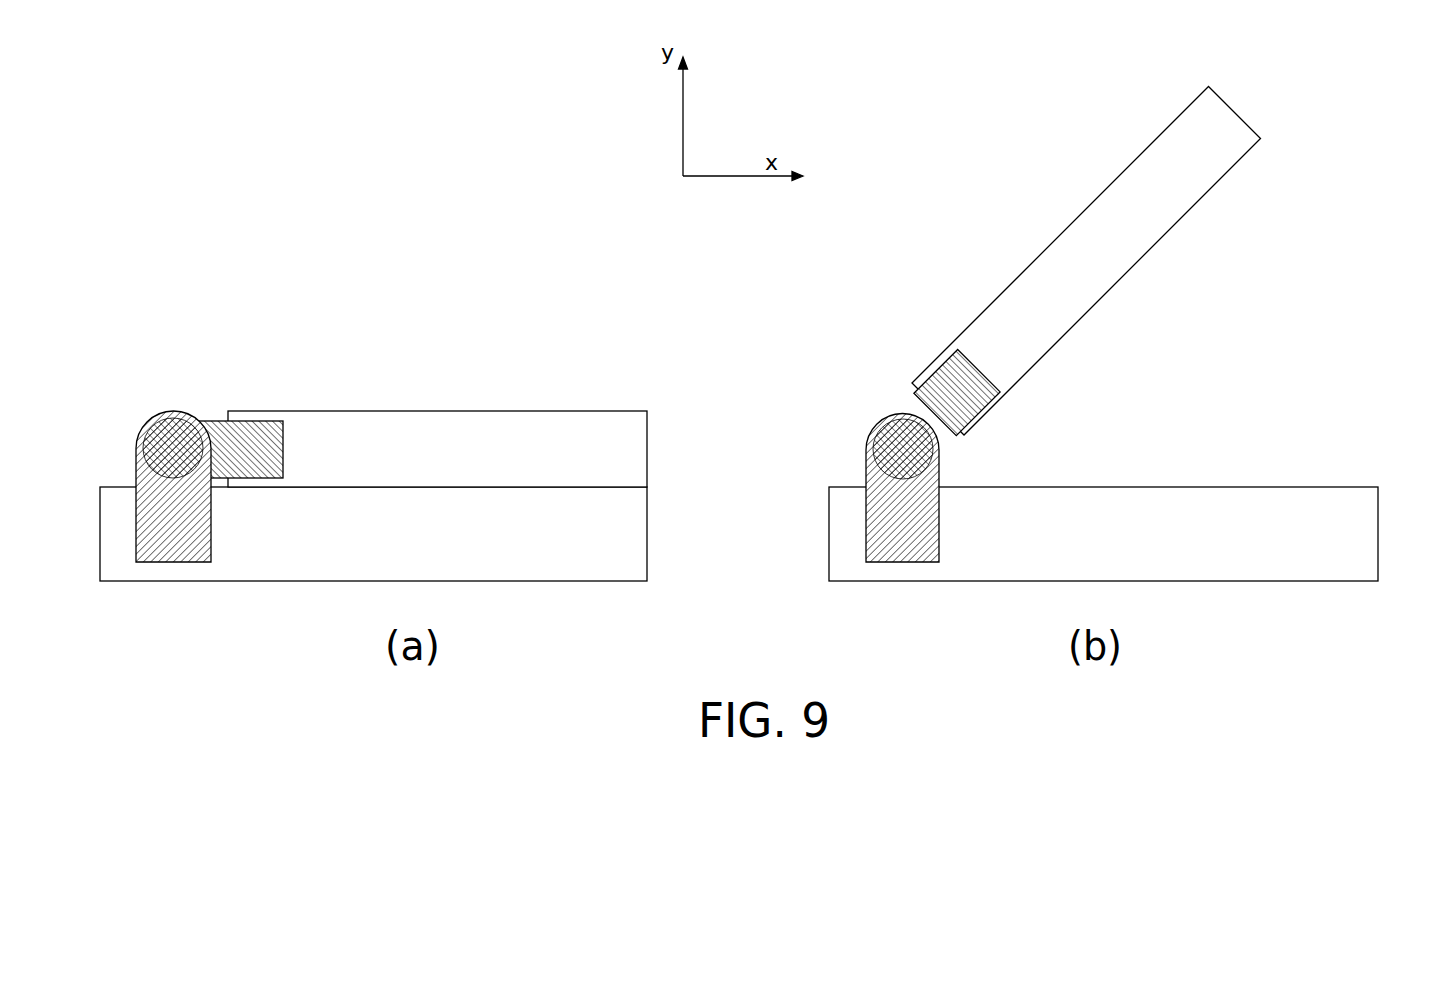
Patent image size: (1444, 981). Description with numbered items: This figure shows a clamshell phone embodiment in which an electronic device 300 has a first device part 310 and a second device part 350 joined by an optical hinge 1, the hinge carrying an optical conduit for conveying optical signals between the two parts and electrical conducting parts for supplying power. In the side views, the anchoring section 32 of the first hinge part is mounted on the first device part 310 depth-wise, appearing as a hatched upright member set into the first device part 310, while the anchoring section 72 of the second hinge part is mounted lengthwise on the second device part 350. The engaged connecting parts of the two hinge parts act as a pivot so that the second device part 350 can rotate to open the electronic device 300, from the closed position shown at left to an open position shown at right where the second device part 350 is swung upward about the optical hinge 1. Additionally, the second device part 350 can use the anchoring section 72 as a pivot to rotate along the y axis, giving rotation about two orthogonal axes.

The optical hinge 1 is at (135, 402).
The anchoring section of the first hinge part 32 is at (198, 508).
The anchoring section of the second hinge part 72 is at (246, 428).
The electronic device 300 is at (446, 311).
The first device part 310 is at (643, 523).
The second device part 350 is at (498, 423).